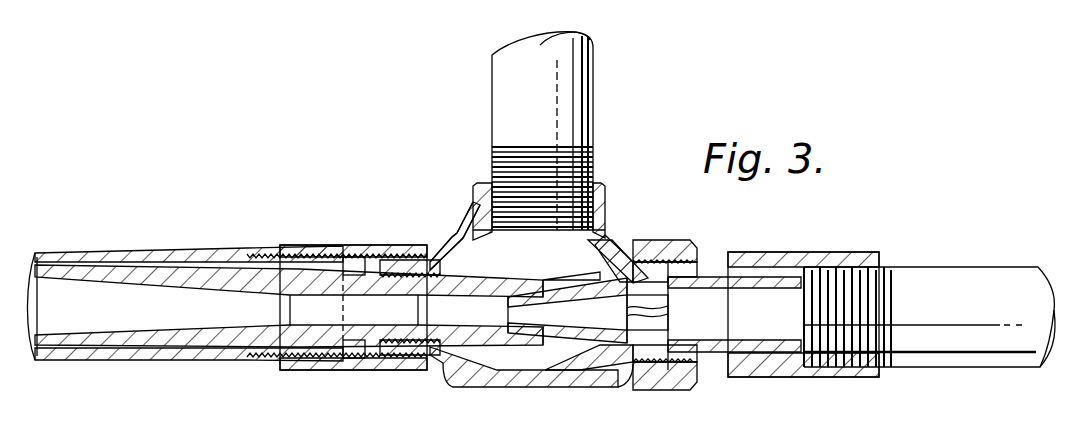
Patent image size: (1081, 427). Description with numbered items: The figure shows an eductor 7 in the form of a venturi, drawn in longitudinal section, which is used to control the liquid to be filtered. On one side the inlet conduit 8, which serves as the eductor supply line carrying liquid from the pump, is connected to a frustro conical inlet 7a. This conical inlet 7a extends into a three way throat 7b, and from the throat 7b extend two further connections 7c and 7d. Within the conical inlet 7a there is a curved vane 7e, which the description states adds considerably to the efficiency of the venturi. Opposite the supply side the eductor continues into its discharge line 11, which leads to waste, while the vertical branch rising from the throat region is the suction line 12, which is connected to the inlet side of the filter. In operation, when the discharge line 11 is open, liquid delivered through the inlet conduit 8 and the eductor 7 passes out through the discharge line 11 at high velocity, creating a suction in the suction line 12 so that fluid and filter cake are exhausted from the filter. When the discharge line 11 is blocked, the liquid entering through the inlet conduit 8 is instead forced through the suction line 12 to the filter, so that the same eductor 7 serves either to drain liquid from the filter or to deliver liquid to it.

The eductor 7 is at (536, 386).
The frustro conical inlet 7a is at (642, 243).
The three way throat 7b is at (582, 262).
The connection 7c is at (588, 204).
The connection 7d is at (463, 305).
The curved vane 7e is at (670, 305).
The inlet conduit 8 is at (959, 268).
The discharge line 11 is at (173, 249).
The suction line 12 is at (505, 99).